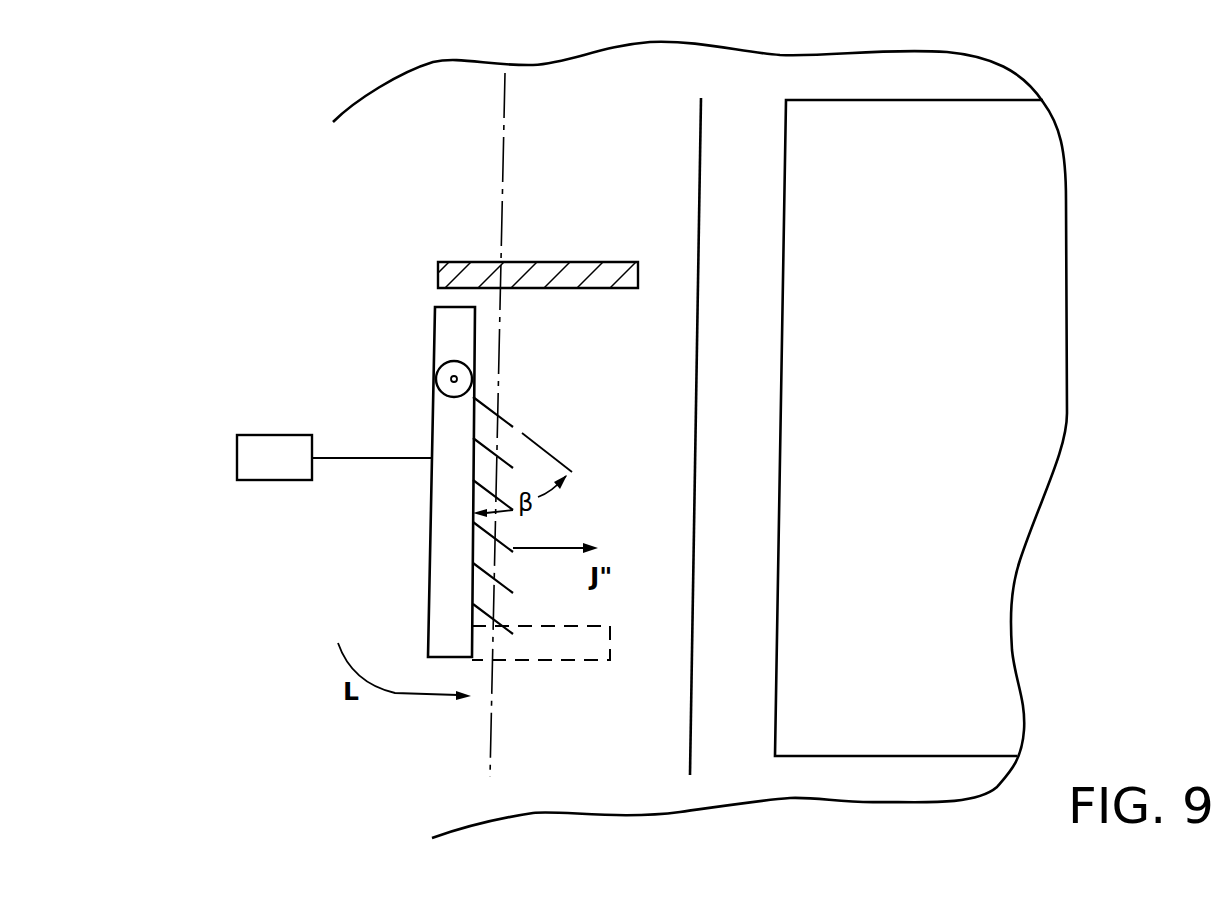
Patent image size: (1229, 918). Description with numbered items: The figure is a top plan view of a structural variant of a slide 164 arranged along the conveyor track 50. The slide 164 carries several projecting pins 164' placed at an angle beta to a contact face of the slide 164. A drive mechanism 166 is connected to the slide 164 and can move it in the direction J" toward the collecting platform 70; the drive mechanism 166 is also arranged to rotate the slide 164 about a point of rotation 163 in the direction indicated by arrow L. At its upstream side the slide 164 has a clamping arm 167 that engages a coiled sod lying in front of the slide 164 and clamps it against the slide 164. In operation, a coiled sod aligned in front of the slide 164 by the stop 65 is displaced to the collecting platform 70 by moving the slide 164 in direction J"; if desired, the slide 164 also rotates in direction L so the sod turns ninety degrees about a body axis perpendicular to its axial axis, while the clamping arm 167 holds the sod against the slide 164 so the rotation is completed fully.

The conveyor track 50 is at (609, 778).
The stop 65 is at (438, 262).
The collecting platform 70 is at (891, 723).
The point of rotation 163 is at (437, 372).
The slide 164 is at (389, 482).
The projecting pins 164' is at (544, 489).
The drive mechanism 166 is at (334, 457).
The clamping arm 167 is at (577, 648).